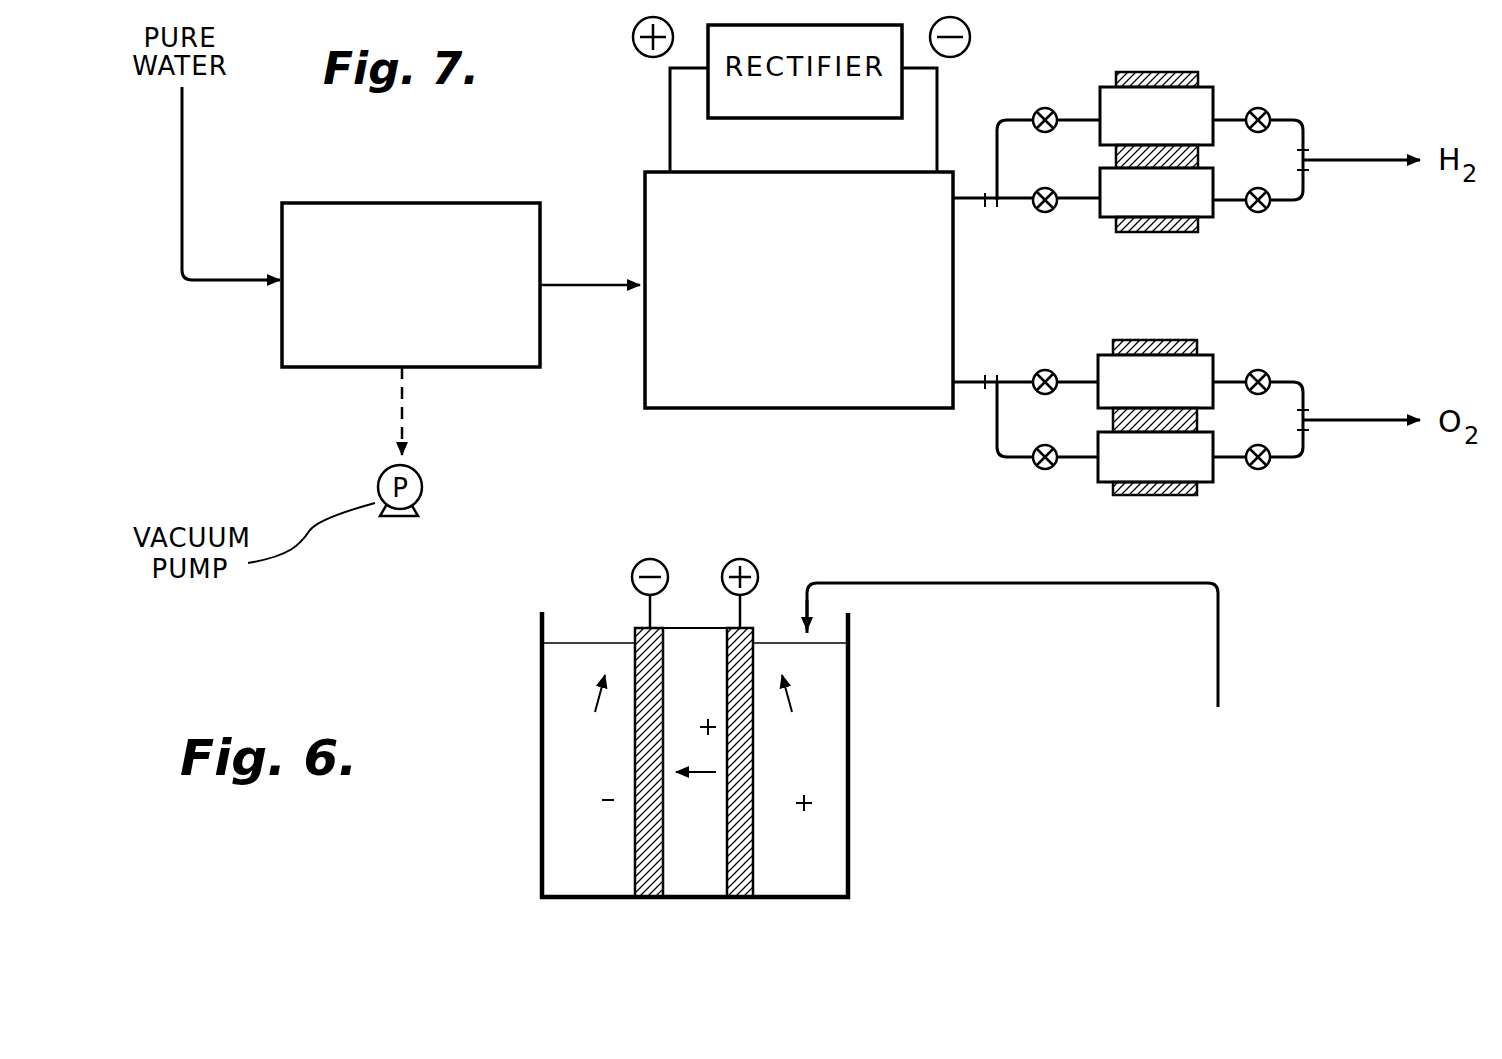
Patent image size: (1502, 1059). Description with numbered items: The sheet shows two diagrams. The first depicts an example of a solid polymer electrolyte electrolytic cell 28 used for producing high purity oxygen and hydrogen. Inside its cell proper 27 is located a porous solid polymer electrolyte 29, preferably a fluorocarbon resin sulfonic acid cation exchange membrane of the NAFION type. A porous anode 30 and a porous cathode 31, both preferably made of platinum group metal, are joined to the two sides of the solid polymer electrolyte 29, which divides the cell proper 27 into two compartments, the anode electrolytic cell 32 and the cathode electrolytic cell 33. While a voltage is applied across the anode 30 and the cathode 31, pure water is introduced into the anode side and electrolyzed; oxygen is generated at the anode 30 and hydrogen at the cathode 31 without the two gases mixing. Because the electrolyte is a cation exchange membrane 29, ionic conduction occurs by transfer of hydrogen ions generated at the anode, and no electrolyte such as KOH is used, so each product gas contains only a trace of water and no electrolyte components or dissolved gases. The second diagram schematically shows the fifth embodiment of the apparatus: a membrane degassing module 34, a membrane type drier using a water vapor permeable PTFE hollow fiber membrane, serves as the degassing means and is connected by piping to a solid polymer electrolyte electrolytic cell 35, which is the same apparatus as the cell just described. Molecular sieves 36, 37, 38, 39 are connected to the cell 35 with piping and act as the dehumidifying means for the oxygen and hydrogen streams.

In FIG. 6, the cell proper 27 is at (828, 903).
In FIG. 6, the solid polymer electrolyte electrolytic cell 28 is at (888, 733).
In FIG. 6, the solid polymer electrolyte 29 is at (677, 657).
In FIG. 6, the porous anode 30 is at (745, 853).
In FIG. 6, the porous cathode 31 is at (640, 877).
In FIG. 6, the anode electrolytic cell 32 is at (820, 673).
In FIG. 6, the cathode electrolytic cell 33 is at (565, 673).
In FIG. 7, the membrane degassing module 34 is at (311, 352).
In FIG. 7, the solid polymer electrolyte electrolytic cell 35 is at (683, 389).
In FIG. 7, the molecular sieve 36 is at (1200, 103).
In FIG. 7, the molecular sieve 37 is at (1122, 188).
In FIG. 7, the molecular sieve 38 is at (1197, 370).
In FIG. 7, the molecular sieve 39 is at (1190, 463).